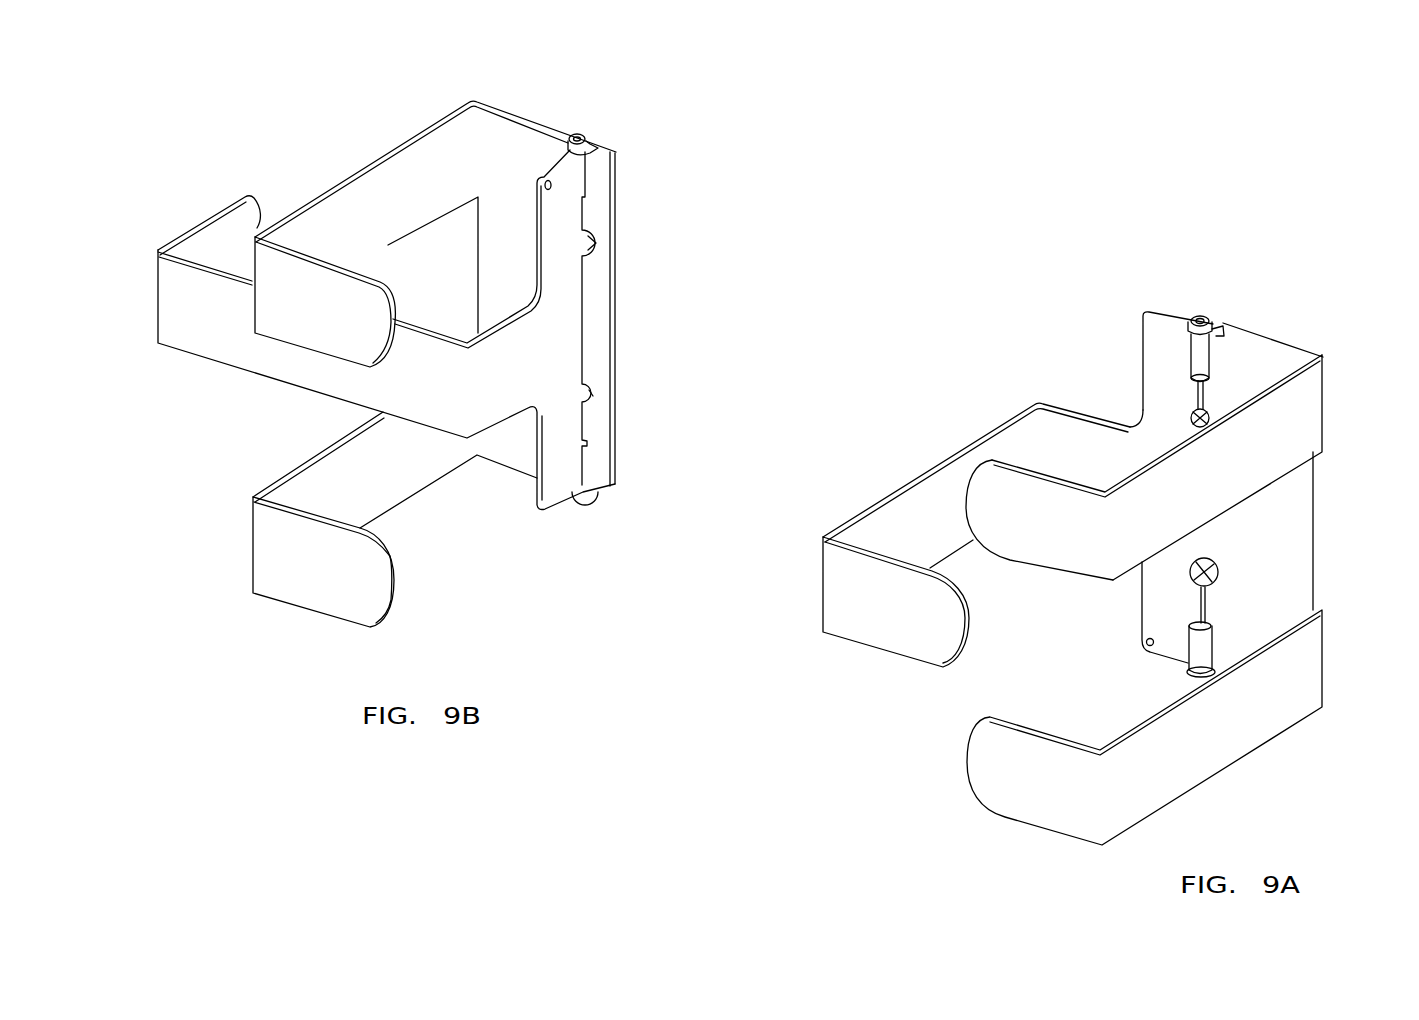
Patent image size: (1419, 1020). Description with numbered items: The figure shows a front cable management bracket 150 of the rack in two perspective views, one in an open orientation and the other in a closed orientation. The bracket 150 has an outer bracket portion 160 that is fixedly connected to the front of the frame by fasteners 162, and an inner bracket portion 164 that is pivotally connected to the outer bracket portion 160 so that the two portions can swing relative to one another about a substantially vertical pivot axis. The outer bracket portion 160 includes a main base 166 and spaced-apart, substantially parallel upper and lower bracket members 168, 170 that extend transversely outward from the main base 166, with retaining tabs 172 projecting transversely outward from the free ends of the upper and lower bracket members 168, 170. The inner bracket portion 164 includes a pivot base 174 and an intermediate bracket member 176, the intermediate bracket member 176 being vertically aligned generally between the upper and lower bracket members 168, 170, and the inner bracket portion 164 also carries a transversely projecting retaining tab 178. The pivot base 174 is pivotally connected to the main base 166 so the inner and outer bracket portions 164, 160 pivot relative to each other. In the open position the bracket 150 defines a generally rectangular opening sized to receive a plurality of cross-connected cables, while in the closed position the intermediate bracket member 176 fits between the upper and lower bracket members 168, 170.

In FIG. 9B, the cable management bracket 150 is at (622, 215).
In FIG. 9A, the cable management bracket 150 is at (1183, 266).
In FIG. 9B, the outer bracket portion 160 is at (493, 100).
In FIG. 9A, the outer bracket portion 160 is at (1307, 423).
In FIG. 9B, the fastener 162 is at (193, 418).
In FIG. 9A, the fastener 162 is at (1190, 573).
In FIG. 9B, the inner bracket portion 164 is at (478, 378).
In FIG. 9A, the inner bracket portion 164 is at (868, 502).
In FIG. 9B, the main base 166 is at (532, 146).
In FIG. 9A, the main base 166 is at (1248, 359).
In FIG. 9B, the upper bracket member 168 is at (335, 187).
In FIG. 9A, the upper bracket member 168 is at (1163, 487).
In FIG. 9B, the lower bracket member 170 is at (393, 507).
In FIG. 9A, the lower bracket member 170 is at (1197, 750).
In FIG. 9B, the retaining tab 172 is at (295, 300).
In FIG. 9B, the pivot base 174 is at (537, 352).
In FIG. 9B, the intermediate bracket member 176 is at (205, 318).
In FIG. 9A, the intermediate bracket member 176 is at (923, 520).
In FIG. 9B, the retaining tab 178 is at (203, 223).
In FIG. 9A, the retaining tab 178 is at (860, 613).